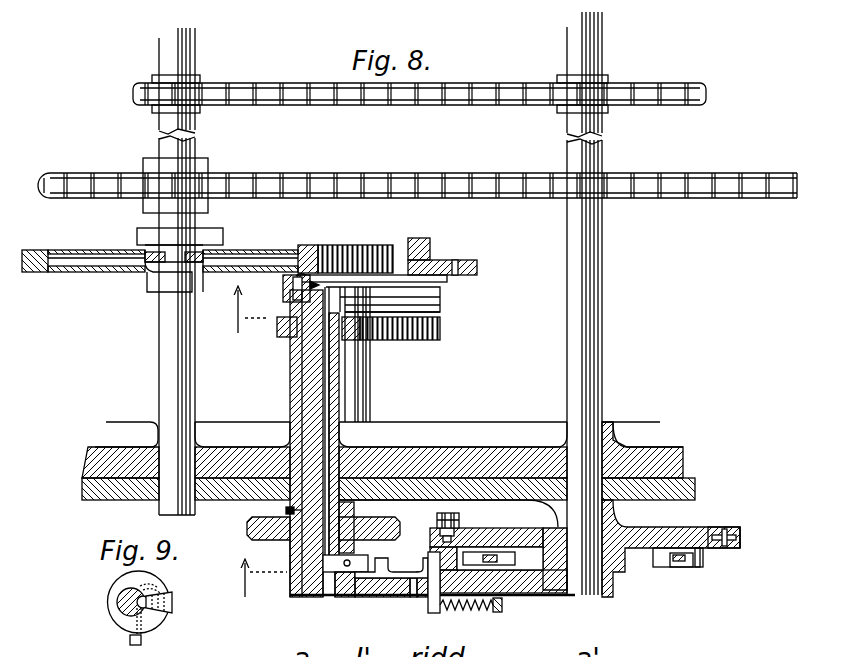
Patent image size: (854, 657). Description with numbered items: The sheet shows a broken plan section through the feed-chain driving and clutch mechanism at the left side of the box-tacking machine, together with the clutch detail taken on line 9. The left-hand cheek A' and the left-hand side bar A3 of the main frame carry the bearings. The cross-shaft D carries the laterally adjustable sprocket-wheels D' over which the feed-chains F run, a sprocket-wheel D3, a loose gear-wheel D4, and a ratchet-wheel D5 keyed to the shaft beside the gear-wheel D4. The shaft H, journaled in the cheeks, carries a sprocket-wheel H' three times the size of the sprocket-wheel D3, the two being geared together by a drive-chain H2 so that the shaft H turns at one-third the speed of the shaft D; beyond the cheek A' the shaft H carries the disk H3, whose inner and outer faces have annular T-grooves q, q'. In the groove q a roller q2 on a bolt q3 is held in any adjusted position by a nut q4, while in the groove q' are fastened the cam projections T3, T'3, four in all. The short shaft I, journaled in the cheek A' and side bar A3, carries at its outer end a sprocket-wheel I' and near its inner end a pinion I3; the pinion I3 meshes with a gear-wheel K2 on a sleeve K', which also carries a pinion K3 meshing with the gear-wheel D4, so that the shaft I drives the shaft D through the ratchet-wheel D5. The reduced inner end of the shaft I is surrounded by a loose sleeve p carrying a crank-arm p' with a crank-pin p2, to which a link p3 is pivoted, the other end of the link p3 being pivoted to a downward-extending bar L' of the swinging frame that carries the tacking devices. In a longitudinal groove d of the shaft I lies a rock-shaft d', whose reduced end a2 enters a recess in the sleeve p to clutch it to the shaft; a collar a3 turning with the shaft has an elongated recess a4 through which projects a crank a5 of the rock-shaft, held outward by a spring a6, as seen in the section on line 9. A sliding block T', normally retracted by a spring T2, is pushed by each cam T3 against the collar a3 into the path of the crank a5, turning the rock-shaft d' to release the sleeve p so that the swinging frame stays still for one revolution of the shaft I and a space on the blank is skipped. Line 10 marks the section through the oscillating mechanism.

In FIG. 8, the cross-shaft D is at (159, 271).
In FIG. 8, the laterally-adjustable sprocket-wheels D' is at (37, 178).
In FIG. 8, the sprocket-wheel D3 is at (133, 103).
In FIG. 8, the gear-wheel D4 is at (52, 273).
In FIG. 8, the ratchet-wheel D5 is at (137, 237).
In FIG. 8, the shaft H is at (596, 303).
In FIG. 8, the sprocket-wheel H' is at (622, 104).
In FIG. 8, the drive-chain H2 is at (425, 107).
In FIG. 8, the disk or wheel H3 is at (697, 554).
In FIG. 8, the feed-chains F is at (731, 173).
In FIG. 8, the sleeve K' is at (397, 299).
In FIG. 8, the gear-wheel K2 is at (415, 340).
In FIG. 8, the pinion K3 is at (358, 245).
In FIG. 8, the downward-extending bars L' is at (442, 250).
In FIG. 8, the loose sleeve p is at (293, 299).
In FIG. 8, the crank-arm p' is at (279, 290).
In FIG. 8, the crank-pin p2 is at (288, 276).
In FIG. 8, the link p3 is at (403, 283).
In FIG. 8, the reduced end portion of rock-shaft a2 is at (441, 310).
In FIG. 8, the collar a3 is at (290, 555).
In FIG. 9, the collar a3 is at (107, 603).
In FIG. 9, the elongated recess a4 is at (158, 595).
In FIG. 8, the crank a5 is at (362, 557).
In FIG. 9, the crank a5 is at (168, 605).
In FIG. 9, the spring a6 is at (152, 583).
In FIG. 8, the longitudinally-extending groove d is at (317, 598).
In FIG. 9, the longitudinally-extending groove d is at (154, 620).
In FIG. 8, the rock-shaft d' is at (370, 422).
In FIG. 8, the short shaft I is at (293, 443).
In FIG. 9, the short shaft I is at (122, 597).
In FIG. 8, the sprocket-wheel I' is at (307, 523).
In FIG. 8, the pinion I3 is at (278, 338).
In FIG. 8, the left-hand cheek A' is at (379, 480).
In FIG. 8, the left-hand bar A3 is at (452, 427).
In FIG. 8, the annular T-groove q is at (727, 524).
In FIG. 8, the annular T-groove q' is at (736, 548).
In FIG. 8, the projection or roller q2 is at (470, 528).
In FIG. 8, the bolt q3 is at (437, 531).
In FIG. 8, the nut q4 is at (445, 513).
In FIG. 8, the sliding block T' is at (391, 591).
In FIG. 8, the spring T2 is at (465, 595).
In FIG. 8, the cam projections T3 is at (685, 567).
In FIG. 8, the cam projection T'3 is at (494, 536).
In FIG. 8, the section line 9 is at (256, 580).
In FIG. 8, the section line 10 is at (238, 311).